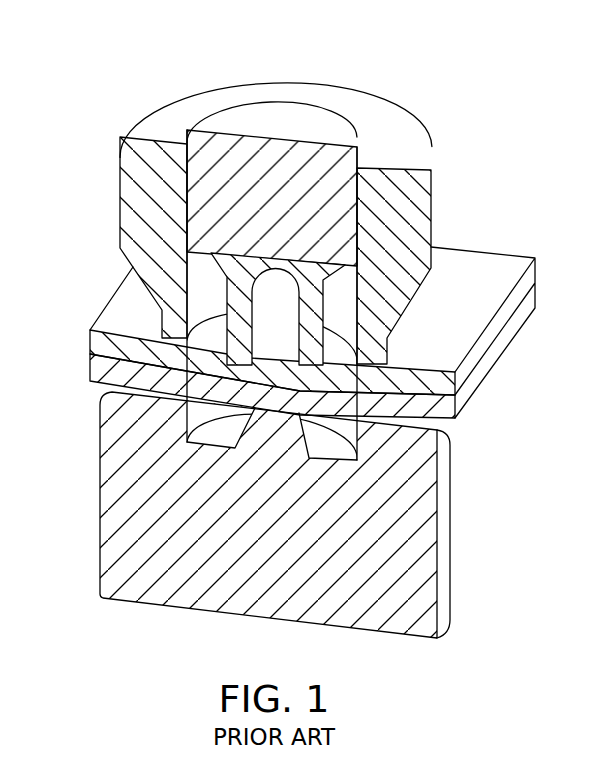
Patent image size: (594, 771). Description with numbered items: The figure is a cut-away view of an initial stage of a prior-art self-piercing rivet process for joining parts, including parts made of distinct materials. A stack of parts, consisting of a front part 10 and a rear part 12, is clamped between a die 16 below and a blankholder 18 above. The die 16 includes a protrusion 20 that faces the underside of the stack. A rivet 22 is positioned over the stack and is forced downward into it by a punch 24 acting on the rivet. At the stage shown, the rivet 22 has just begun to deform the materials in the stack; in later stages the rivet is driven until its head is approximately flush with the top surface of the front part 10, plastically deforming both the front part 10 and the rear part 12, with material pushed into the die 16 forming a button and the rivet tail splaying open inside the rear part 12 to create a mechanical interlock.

The front part 10 is at (103, 347).
The rear part 12 is at (100, 372).
The die 16 is at (453, 536).
The blankholder 18 is at (119, 187).
The protrusion 20 is at (270, 420).
The rivet 22 is at (314, 312).
The punch 24 is at (293, 167).